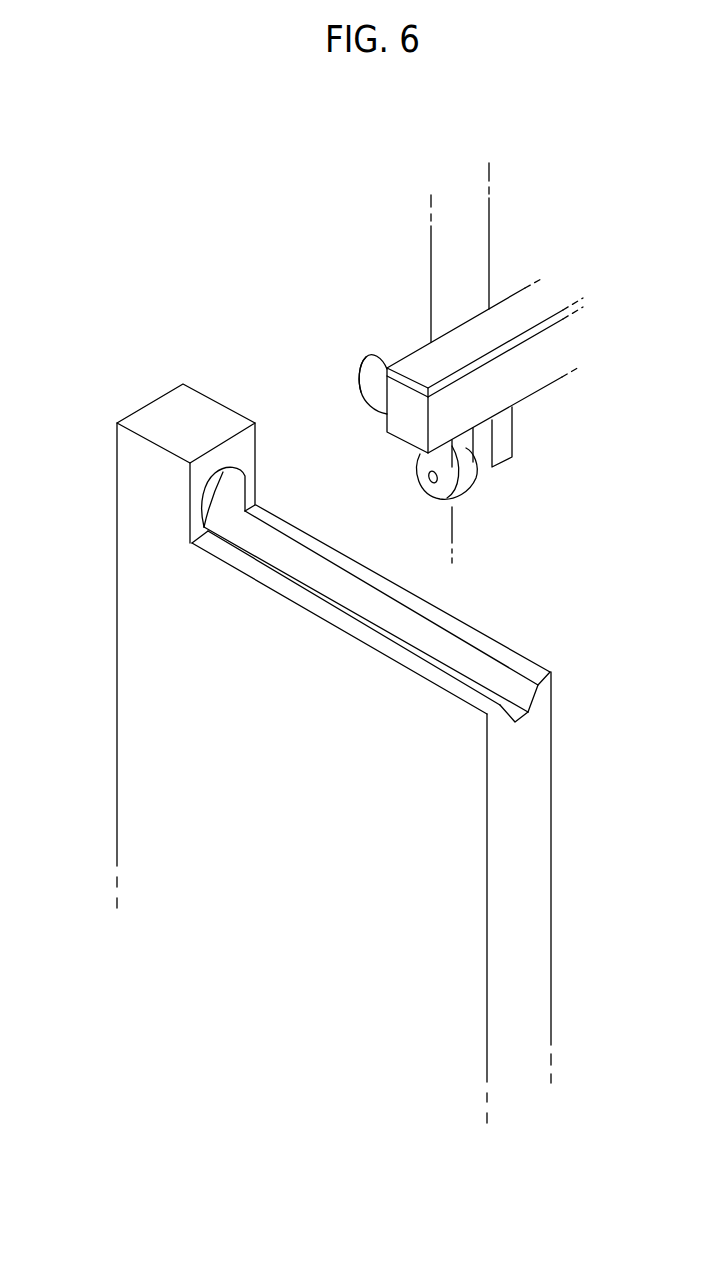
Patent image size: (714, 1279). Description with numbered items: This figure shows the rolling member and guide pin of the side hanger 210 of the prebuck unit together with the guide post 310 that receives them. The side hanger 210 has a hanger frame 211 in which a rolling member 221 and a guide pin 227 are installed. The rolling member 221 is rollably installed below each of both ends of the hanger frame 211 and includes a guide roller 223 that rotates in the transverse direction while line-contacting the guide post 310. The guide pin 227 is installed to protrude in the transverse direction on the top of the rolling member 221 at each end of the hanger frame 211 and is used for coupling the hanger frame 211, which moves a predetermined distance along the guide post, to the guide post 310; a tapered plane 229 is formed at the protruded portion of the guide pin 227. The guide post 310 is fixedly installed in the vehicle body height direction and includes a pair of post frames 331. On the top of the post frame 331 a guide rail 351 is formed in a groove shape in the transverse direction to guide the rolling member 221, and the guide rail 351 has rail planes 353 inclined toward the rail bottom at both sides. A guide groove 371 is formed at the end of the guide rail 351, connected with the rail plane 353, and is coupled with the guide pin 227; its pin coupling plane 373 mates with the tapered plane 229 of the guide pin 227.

The side hanger 210 is at (573, 273).
The hanger frame 211 is at (538, 394).
The rolling member 221 is at (484, 498).
The guide roller 223 is at (471, 477).
The guide pin 227 is at (369, 345).
The tapered plane 229 is at (361, 381).
The guide post 310 is at (108, 653).
The post frame 331 is at (133, 768).
The guide rail 351 is at (527, 726).
The rail plane 353 is at (508, 680).
The guide groove 371 is at (197, 494).
The pin coupling plane 373 is at (239, 484).